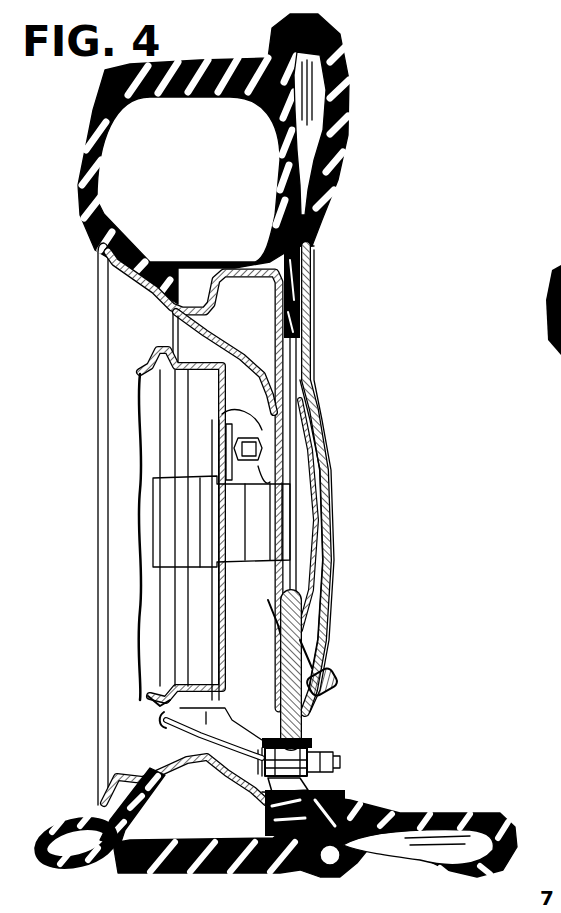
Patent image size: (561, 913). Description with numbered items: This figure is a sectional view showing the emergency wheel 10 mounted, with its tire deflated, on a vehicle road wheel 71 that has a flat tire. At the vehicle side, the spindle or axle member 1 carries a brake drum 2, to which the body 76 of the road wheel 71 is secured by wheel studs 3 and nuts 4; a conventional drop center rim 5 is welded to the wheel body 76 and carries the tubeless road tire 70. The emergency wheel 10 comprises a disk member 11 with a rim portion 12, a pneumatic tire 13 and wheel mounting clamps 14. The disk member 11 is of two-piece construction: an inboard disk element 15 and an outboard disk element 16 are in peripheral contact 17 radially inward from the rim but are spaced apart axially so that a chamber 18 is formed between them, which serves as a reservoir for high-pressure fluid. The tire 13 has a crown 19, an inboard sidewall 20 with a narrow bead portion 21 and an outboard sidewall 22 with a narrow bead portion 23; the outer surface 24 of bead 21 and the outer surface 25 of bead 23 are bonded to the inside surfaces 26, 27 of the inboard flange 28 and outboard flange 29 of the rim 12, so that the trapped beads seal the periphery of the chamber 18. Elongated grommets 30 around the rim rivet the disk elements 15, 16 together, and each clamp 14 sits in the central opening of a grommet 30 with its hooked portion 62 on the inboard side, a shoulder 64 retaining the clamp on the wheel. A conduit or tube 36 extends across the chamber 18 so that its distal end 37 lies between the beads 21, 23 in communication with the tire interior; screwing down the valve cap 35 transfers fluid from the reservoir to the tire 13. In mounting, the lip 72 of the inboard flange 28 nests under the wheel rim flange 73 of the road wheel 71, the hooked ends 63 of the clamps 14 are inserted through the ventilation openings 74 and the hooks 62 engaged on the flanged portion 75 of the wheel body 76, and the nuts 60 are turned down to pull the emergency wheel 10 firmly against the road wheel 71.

The spindle or axle member 1 is at (155, 492).
The brake drum 2 is at (146, 364).
The wheel studs 3 is at (210, 456).
The nuts 4 is at (250, 470).
The drop center rim 5 is at (152, 283).
The emergency wheel 10 is at (334, 553).
The disk member 11 is at (318, 402).
The rim portion 12 is at (318, 258).
The pneumatic tire 13 is at (342, 64).
The wheel mounting clamps 14 is at (340, 755).
The inboard disk element 15 is at (274, 614).
The outboard disk element 16 is at (332, 604).
The peripheral contact 17 is at (306, 712).
The chamber 18 is at (322, 510).
The crown 19 is at (284, 22).
The inboard sidewall 20 is at (305, 138).
The bead portion 21 is at (262, 262).
The outboard sidewall 22 is at (340, 148).
The bead portion 23 is at (312, 290).
The outer surface 24 is at (240, 270).
The outer surface 25 is at (308, 306).
The inside surface 26 is at (274, 304).
The inside surface 27 is at (311, 332).
The inboard flange 28 is at (274, 324).
The outboard flange 29 is at (308, 234).
The elongated grommets 30 is at (272, 738).
The valve cap 35 is at (336, 680).
The conduit or tube 36 is at (316, 454).
The distal end 37 is at (277, 226).
The nut 60 is at (318, 790).
The hooked portion 62 is at (162, 712).
The end 63 is at (164, 722).
The shoulder 64 is at (262, 752).
The tire 70 is at (66, 820).
The vehicle road wheel 71 is at (96, 726).
The lip 72 is at (270, 820).
The wheel rim flange 73 is at (262, 812).
The ventilation openings 74 is at (188, 738).
The flanged portion 75 is at (212, 710).
The body 76 is at (246, 378).